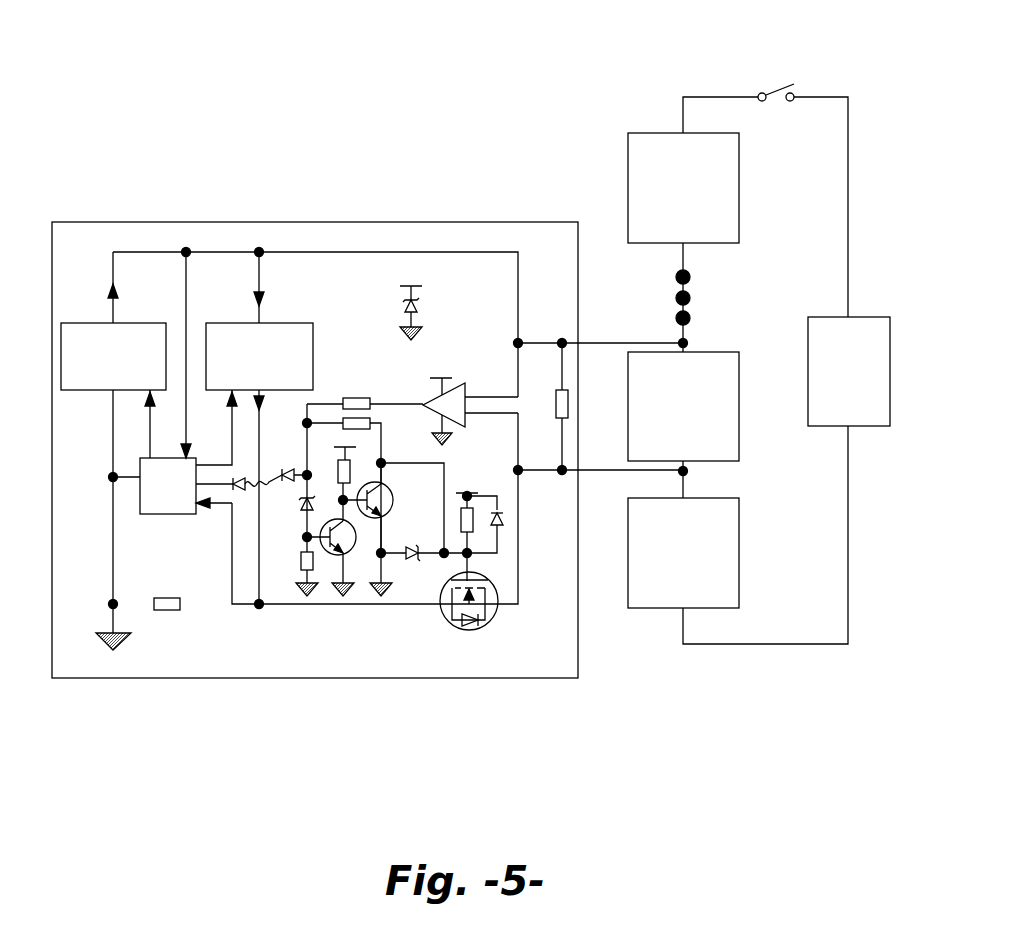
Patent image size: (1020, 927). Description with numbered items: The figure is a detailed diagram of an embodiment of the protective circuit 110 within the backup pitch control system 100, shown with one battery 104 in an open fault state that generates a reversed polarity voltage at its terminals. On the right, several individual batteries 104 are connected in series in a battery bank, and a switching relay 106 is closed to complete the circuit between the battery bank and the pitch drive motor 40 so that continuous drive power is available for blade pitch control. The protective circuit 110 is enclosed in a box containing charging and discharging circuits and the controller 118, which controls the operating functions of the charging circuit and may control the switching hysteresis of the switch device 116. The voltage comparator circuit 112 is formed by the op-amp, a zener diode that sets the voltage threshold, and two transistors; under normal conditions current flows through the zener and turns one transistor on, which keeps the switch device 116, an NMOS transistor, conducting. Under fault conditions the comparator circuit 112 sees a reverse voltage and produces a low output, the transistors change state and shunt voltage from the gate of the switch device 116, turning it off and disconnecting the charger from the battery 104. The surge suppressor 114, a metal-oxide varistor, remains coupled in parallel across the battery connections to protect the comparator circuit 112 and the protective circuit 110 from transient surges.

The system 100 is at (560, 84).
The protective circuit 110 is at (447, 232).
The voltage comparator circuit 112 is at (338, 343).
The surge suppressor 114 is at (570, 376).
The switch device 116 is at (494, 646).
The controller 118 is at (157, 515).
The battery 104 is at (736, 352).
The switching relay 106 is at (779, 90).
The pitch drive motor 40 is at (827, 316).